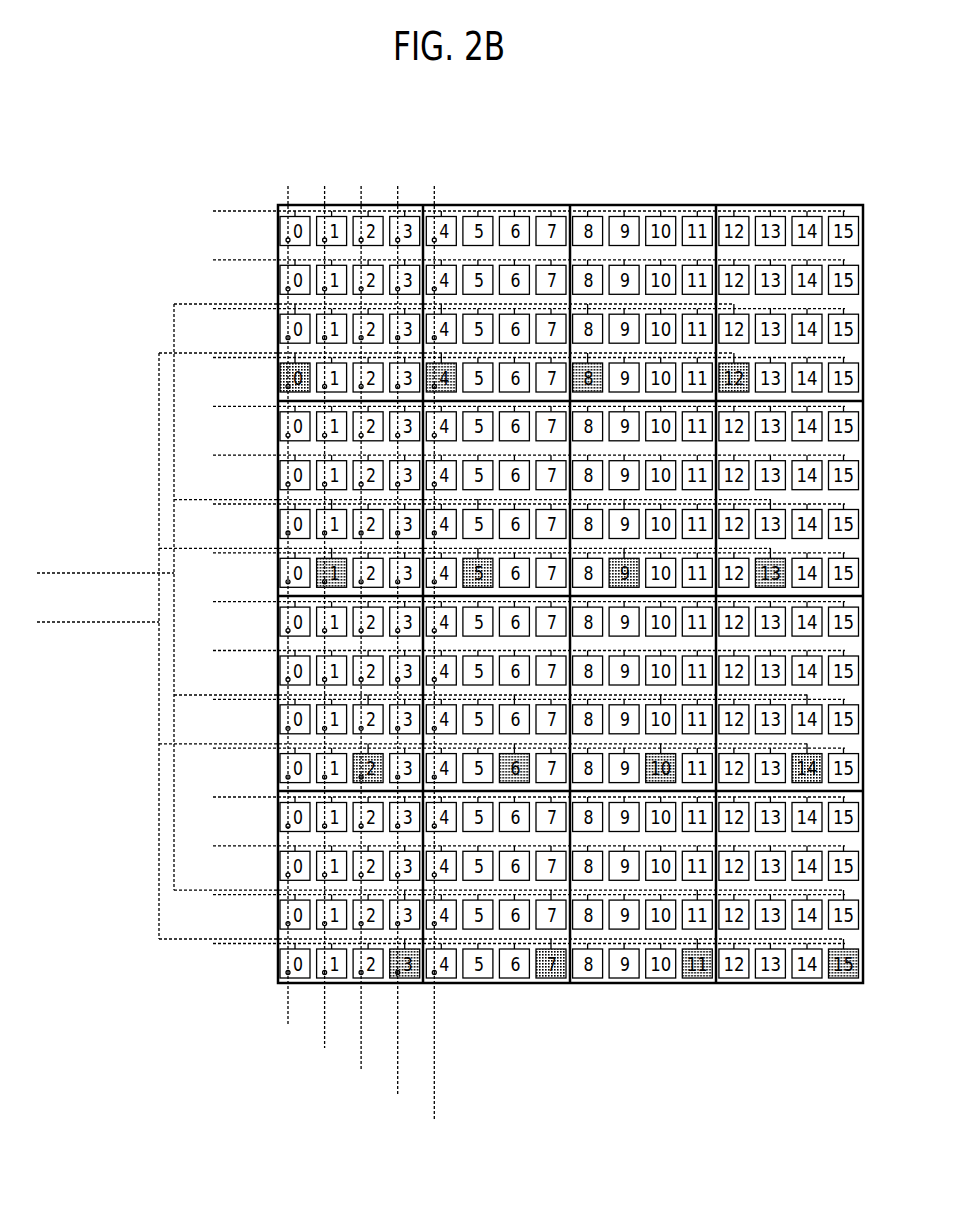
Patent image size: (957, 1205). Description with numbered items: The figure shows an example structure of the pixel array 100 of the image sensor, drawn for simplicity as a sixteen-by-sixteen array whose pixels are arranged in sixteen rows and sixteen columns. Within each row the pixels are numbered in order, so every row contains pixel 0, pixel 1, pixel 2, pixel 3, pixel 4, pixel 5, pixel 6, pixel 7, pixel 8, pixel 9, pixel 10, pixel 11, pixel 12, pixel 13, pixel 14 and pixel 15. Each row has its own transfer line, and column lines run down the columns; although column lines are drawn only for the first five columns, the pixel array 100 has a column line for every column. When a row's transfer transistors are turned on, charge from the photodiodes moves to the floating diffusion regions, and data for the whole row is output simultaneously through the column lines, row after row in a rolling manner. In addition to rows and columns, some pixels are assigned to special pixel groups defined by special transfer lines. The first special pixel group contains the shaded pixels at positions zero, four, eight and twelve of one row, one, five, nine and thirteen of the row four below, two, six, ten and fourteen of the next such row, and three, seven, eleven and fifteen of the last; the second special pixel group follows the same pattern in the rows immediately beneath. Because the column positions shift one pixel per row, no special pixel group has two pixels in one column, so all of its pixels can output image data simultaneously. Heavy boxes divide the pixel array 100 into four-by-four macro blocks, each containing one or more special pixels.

The pixel array 100 is at (863, 142).
The pixel 0 is at (291, 606).
The pixel 1 is at (327, 618).
The pixel 2 is at (364, 631).
The pixel 3 is at (400, 642).
The pixel 4 is at (437, 655).
The pixel 5 is at (478, 571).
The pixel 6 is at (514, 571).
The pixel 7 is at (551, 571).
The pixel 8 is at (588, 571).
The pixel 9 is at (624, 571).
The pixel 10 is at (661, 571).
The pixel 11 is at (697, 571).
The pixel 12 is at (734, 571).
The pixel 13 is at (770, 571).
The pixel 14 is at (807, 571).
The pixel 15 is at (844, 571).